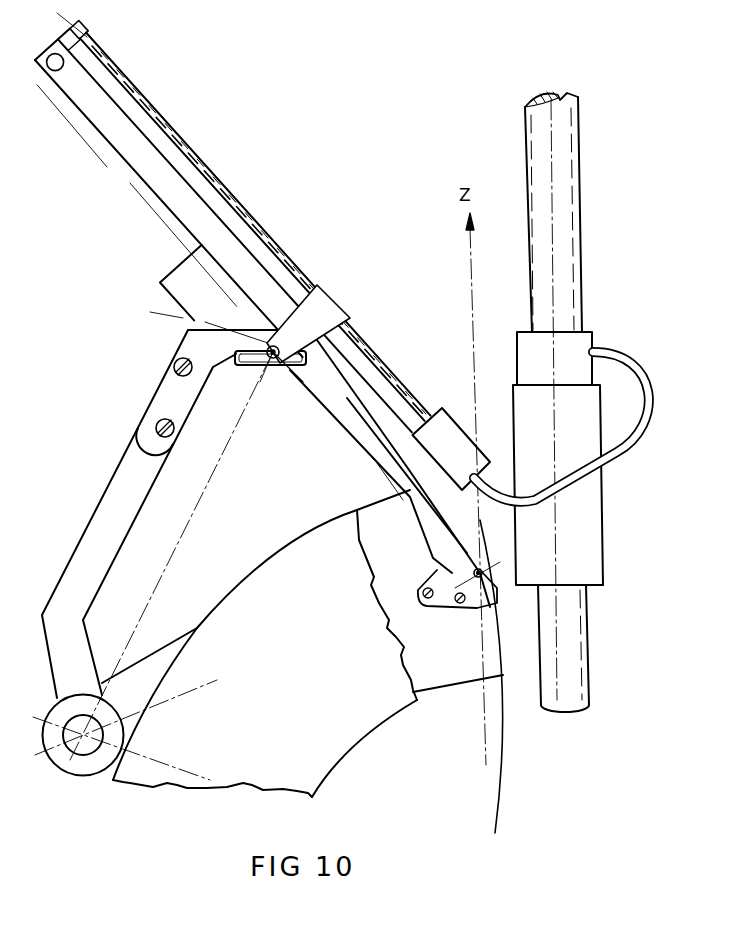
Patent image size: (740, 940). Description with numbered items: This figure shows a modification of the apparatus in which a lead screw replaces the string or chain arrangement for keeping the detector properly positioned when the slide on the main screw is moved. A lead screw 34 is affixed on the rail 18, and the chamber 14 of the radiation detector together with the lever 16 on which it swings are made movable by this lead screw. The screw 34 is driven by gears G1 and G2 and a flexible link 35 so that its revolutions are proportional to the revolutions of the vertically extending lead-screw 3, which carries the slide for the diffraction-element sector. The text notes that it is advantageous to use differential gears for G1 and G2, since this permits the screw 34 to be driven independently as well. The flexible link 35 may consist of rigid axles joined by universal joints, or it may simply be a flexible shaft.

The lead-screw 3 is at (565, 268).
The chamber of a radiation detector 14 is at (187, 270).
The lever arm 16 is at (133, 452).
The rail 18 is at (145, 170).
The lead screw 34 is at (157, 110).
The flexible link 35 is at (607, 452).
The gear G1 is at (582, 348).
The gear G2 is at (440, 423).